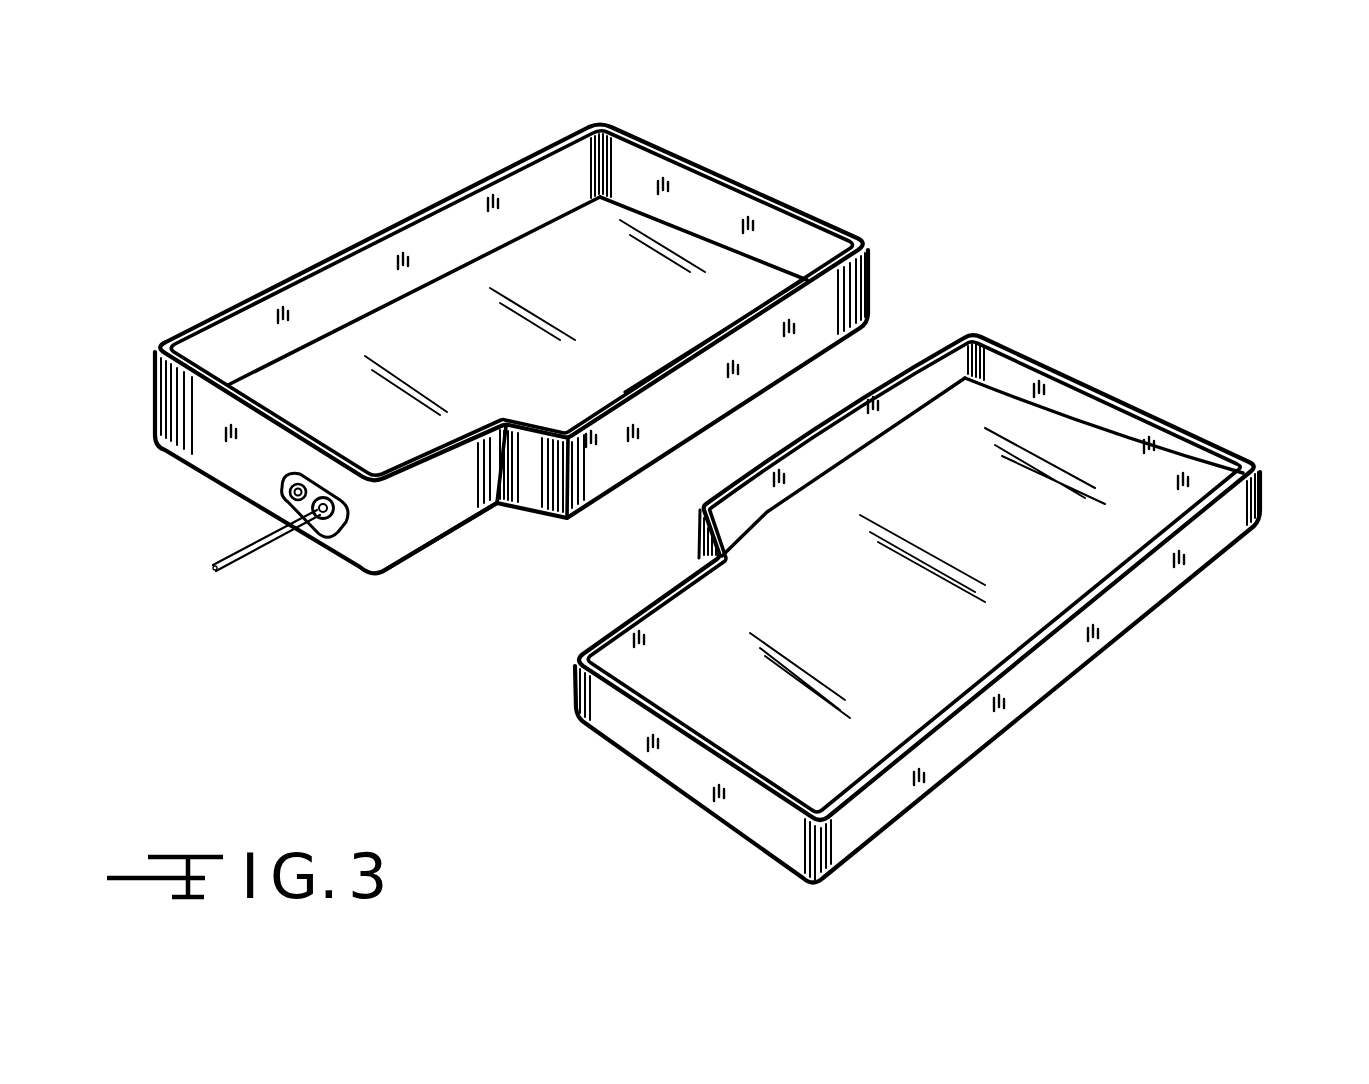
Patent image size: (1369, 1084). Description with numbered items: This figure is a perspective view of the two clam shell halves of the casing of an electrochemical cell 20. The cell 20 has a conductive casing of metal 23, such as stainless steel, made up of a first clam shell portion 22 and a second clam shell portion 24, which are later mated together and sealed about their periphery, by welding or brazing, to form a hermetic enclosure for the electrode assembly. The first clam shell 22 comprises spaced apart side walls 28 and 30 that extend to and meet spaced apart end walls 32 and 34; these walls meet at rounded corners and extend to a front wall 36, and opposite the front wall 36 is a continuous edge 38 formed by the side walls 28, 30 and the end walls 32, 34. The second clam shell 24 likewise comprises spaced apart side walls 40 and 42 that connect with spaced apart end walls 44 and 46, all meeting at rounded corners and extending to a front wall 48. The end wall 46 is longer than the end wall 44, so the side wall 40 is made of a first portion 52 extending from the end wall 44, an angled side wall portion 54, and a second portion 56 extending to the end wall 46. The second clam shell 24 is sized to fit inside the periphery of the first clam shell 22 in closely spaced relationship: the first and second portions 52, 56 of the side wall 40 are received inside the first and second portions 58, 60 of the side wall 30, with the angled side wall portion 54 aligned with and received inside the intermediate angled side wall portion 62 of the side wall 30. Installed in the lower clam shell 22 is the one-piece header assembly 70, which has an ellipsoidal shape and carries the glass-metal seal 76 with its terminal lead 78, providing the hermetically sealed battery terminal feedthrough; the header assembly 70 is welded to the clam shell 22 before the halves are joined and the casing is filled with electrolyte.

The electrochemical cell 20 is at (1122, 843).
The first clam shell portion 22 is at (868, 290).
The conductive casing of metal 23 is at (235, 180).
The second clam shell portion 24 is at (1262, 490).
The side wall 28 is at (522, 190).
The side wall 30 is at (757, 360).
The end wall 32 is at (712, 200).
The end wall 34 is at (217, 437).
The front wall 36 is at (628, 212).
The continuous edge 38 is at (780, 200).
The side wall 40 is at (938, 377).
The side wall 42 is at (1148, 588).
The end wall 44 is at (647, 743).
The end wall 46 is at (1095, 415).
The front wall 48 is at (1177, 490).
The first portion of side wall 52 is at (606, 642).
The angled side wall portion 54 is at (697, 537).
The second portion of side wall 56 is at (905, 397).
The first portion of side wall 58 is at (433, 473).
The second portion of side wall 60 is at (697, 367).
The intermediate angled side wall portion 62 is at (537, 422).
The one-piece header assembly 70 is at (282, 490).
The glass-metal seal 76 is at (328, 522).
The terminal lead 78 is at (214, 568).